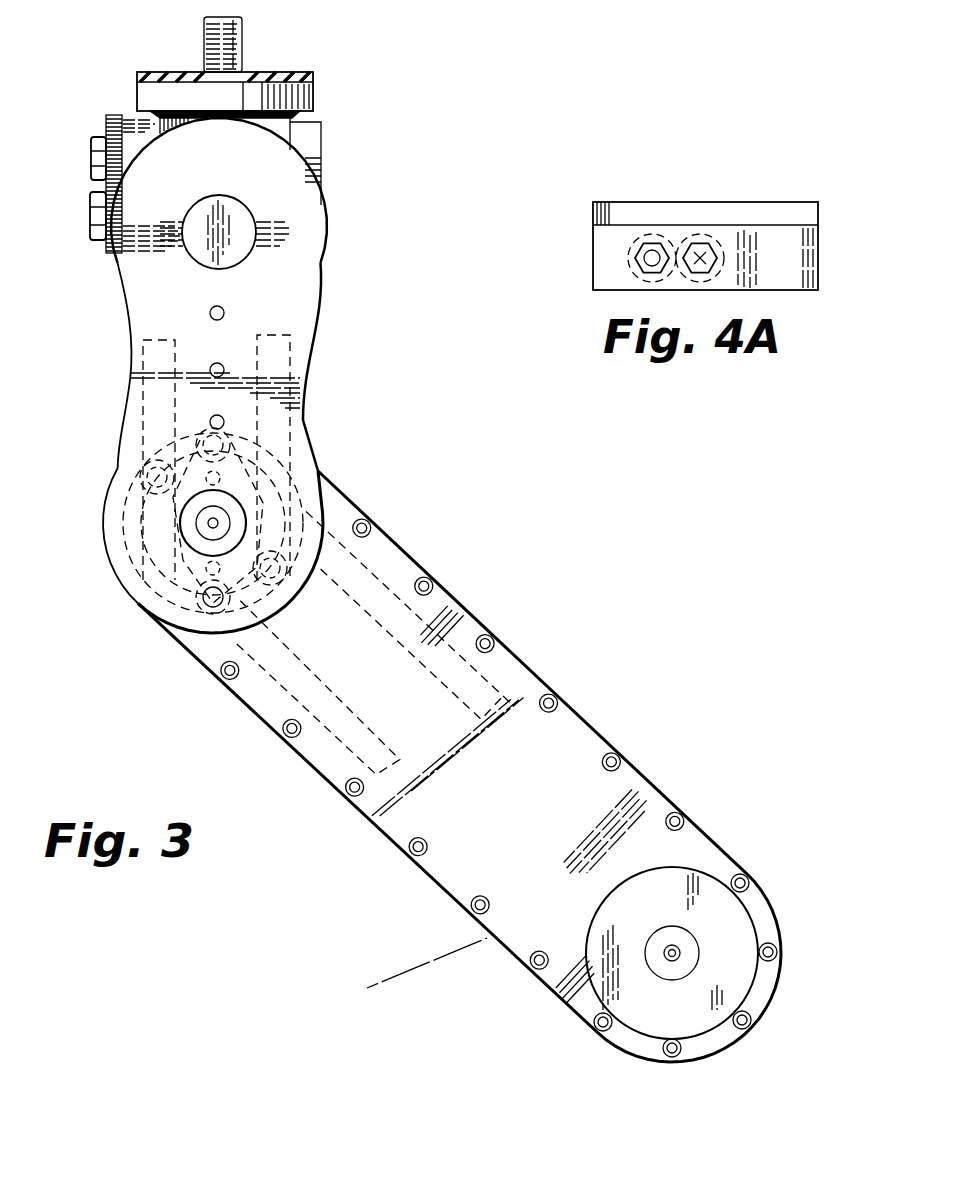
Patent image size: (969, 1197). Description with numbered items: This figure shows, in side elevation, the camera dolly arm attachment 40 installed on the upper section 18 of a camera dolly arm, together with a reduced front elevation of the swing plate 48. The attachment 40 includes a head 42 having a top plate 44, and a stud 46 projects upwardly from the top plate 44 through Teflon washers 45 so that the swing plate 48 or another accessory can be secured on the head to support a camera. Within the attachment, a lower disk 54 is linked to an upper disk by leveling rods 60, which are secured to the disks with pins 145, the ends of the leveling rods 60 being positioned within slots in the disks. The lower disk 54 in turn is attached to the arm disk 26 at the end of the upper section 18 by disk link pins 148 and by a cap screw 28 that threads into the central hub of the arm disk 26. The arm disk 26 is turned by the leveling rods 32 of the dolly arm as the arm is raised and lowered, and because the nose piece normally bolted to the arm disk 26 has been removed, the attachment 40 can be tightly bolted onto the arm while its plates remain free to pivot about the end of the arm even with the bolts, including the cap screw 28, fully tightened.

In FIG. 3, the upper section 18 is at (545, 761).
In FIG. 3, the arm disk 26 is at (178, 510).
In FIG. 3, the cap screw 28 is at (206, 526).
In FIG. 3, the leveling rods 32 is at (385, 585).
In FIG. 3, the attachment 40 is at (318, 312).
In FIG. 3, the head 42 is at (273, 128).
In FIG. 3, the top plate 44 is at (152, 97).
In FIG. 3, the Teflon washers 45 is at (305, 72).
In FIG. 3, the stud 46 is at (240, 52).
In FIG. 4A, the swing plate 48 is at (818, 245).
In FIG. 3, the lower disk 54 is at (150, 572).
In FIG. 3, the leveling rods 60 is at (290, 345).
In FIG. 3, the pins 145 is at (150, 472).
In FIG. 3, the disk link pins 148 is at (203, 571).